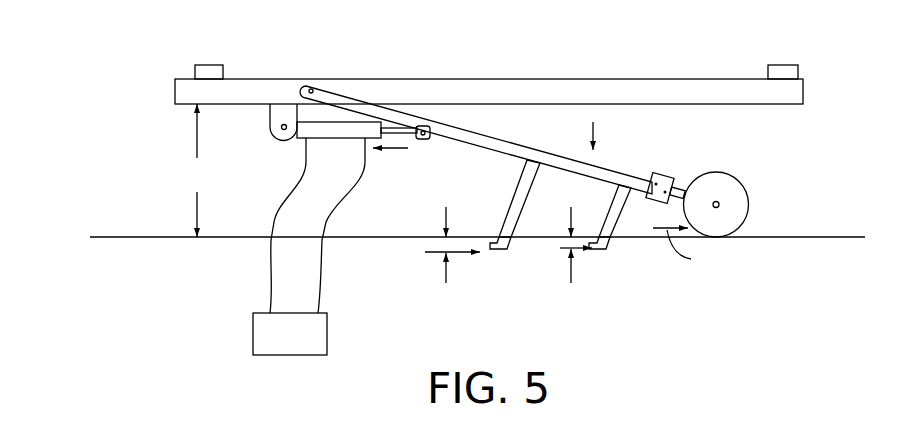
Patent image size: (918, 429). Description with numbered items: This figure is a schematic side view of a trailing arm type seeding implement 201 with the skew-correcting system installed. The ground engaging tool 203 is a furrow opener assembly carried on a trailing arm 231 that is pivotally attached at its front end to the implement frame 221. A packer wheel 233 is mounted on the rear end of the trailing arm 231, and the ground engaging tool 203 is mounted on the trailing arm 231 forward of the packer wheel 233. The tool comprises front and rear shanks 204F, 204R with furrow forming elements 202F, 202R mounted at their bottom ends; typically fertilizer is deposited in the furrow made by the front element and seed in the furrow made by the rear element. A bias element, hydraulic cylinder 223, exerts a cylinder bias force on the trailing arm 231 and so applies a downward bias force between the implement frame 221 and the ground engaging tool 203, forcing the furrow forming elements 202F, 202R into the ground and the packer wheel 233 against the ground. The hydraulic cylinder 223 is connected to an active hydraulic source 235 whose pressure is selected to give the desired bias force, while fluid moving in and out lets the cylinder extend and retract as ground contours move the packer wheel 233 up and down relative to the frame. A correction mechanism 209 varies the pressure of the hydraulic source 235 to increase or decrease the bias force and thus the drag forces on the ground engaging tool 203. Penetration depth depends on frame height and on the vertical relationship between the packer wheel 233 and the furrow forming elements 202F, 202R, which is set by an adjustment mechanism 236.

The trailing arm type seeding implement 201 is at (662, 34).
The implement frame 221 is at (543, 79).
The hydraulic cylinder 223 is at (333, 138).
The ground engaging tool 203 is at (544, 318).
The trailing arm 231 is at (487, 134).
The adjustment mechanism 236 is at (664, 173).
The packer wheel 233 is at (750, 190).
The front shank 204F is at (527, 172).
The rear shank 204R is at (616, 196).
The front furrow forming element 202F is at (497, 250).
The rear furrow forming element 202R is at (600, 250).
The correction mechanism 209 is at (327, 337).
The hydraulic source 235 is at (290, 334).